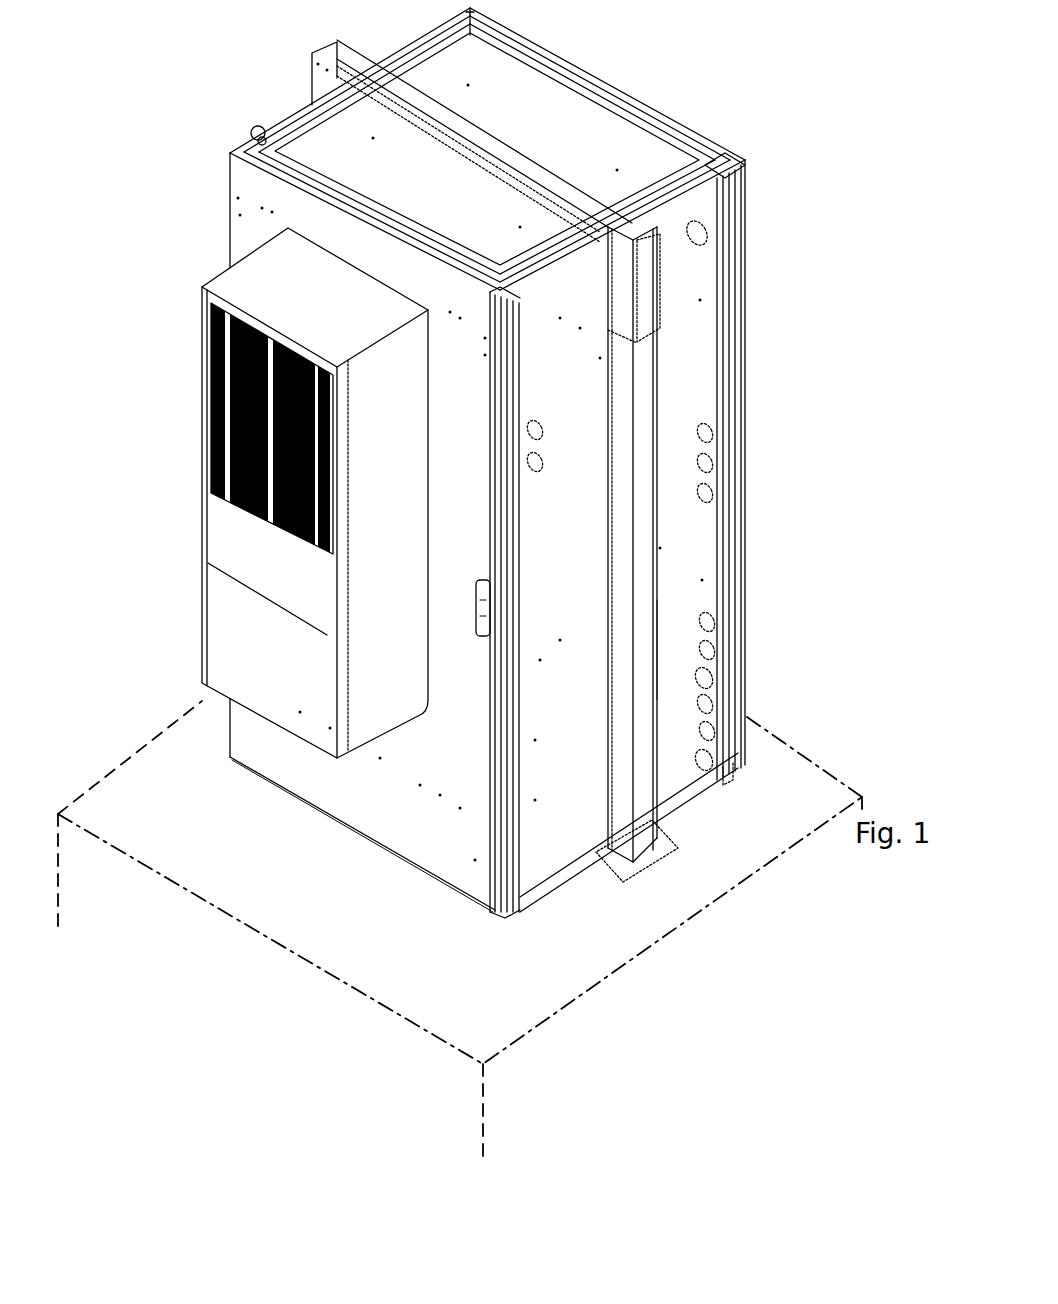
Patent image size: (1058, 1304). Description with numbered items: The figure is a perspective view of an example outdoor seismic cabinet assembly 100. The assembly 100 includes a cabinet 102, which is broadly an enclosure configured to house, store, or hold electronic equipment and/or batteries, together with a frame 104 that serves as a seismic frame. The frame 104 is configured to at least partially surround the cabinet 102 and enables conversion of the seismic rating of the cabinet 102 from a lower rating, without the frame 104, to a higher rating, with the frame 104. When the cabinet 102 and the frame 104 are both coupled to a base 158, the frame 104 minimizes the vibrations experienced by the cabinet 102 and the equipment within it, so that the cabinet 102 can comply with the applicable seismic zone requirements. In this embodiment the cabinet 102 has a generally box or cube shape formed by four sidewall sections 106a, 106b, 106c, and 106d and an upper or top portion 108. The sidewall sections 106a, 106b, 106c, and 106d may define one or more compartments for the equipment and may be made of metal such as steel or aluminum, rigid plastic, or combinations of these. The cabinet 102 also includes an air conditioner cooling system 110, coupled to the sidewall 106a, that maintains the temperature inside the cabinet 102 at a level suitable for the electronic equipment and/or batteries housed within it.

The assembly 100 is at (92, 150).
The cabinet 102 is at (785, 150).
The frame 104 is at (657, 385).
The sidewall section 106a is at (382, 802).
The sidewall section 106b is at (685, 633).
The sidewall section 106c is at (673, 120).
The sidewall section 106d is at (283, 120).
The upper portion 108 is at (537, 97).
The air conditioner cooling system 110 is at (228, 535).
The base 158 is at (308, 948).